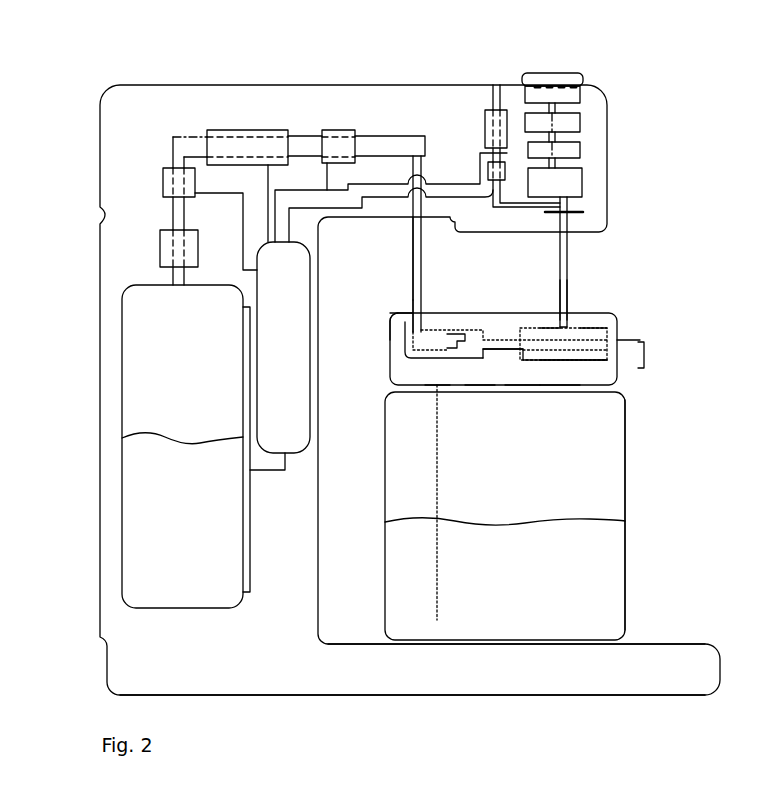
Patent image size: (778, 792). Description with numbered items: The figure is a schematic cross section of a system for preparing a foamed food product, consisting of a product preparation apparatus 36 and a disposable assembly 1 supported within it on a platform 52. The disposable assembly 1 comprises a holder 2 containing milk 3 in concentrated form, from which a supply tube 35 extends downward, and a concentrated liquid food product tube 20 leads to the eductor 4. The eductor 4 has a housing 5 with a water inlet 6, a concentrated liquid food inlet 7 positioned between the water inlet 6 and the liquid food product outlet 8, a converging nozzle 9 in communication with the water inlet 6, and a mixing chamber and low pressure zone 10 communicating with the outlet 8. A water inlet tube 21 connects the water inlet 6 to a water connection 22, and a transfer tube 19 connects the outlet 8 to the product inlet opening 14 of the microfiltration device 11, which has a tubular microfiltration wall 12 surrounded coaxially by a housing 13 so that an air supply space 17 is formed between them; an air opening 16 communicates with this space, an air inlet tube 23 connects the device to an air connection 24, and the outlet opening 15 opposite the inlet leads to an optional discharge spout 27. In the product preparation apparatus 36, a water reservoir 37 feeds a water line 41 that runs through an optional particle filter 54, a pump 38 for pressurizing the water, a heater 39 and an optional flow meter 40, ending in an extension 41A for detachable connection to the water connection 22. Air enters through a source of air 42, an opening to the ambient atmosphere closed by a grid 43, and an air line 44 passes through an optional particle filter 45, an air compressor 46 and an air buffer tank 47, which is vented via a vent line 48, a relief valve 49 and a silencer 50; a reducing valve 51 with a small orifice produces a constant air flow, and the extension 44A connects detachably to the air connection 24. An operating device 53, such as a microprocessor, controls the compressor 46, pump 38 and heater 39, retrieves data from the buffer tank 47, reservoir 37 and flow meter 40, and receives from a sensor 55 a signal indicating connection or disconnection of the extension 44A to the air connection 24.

The disposable assembly 1 is at (635, 470).
The holder 2 is at (625, 553).
The milk 3 is at (514, 588).
The eductor 4 is at (439, 324).
The housing 5 is at (426, 358).
The water inlet 6 is at (391, 317).
The concentrated liquid food inlet 7 is at (443, 358).
The liquid food product outlet 8 is at (482, 350).
The converging nozzle 9 is at (452, 334).
The low pressure zone 10 is at (472, 361).
The microfiltration device 11 is at (534, 320).
The microfiltration wall 12 is at (540, 349).
The housing 13 is at (563, 360).
The product inlet opening 14 is at (520, 371).
The outlet opening 15 is at (619, 337).
The air opening 16 is at (583, 331).
The air supply space 17 is at (549, 357).
The transfer tube 19 is at (497, 340).
The concentrated liquid food product tube 20 is at (433, 381).
The water inlet tube 21 is at (411, 321).
The water connection 22 is at (424, 310).
The air inlet tube 23 is at (549, 318).
The air connection 24 is at (568, 322).
The discharge spout 27 is at (646, 360).
The supply tube 35 is at (440, 470).
The product preparation apparatus 36 is at (118, 263).
The water reservoir 37 is at (178, 398).
The pump 38 is at (163, 175).
The heater 39 is at (213, 128).
The flow meter 40 is at (343, 130).
The water line 41 is at (170, 137).
The extension 41A is at (413, 242).
The source of air 42 is at (553, 75).
The grid 43 is at (539, 83).
The air line 44 is at (555, 108).
The extension 44A is at (568, 258).
The particle filter 45 is at (580, 127).
The air compressor 46 is at (580, 153).
The air buffer tank 47 is at (582, 185).
The vent line 48 is at (492, 201).
The relief valve 49 is at (488, 168).
The silencer 50 is at (485, 128).
The reducing valve 51 is at (583, 212).
The platform 52 is at (503, 678).
The operating device 53 is at (271, 362).
The particle filter 54 is at (160, 242).
The sensor 55 is at (568, 295).